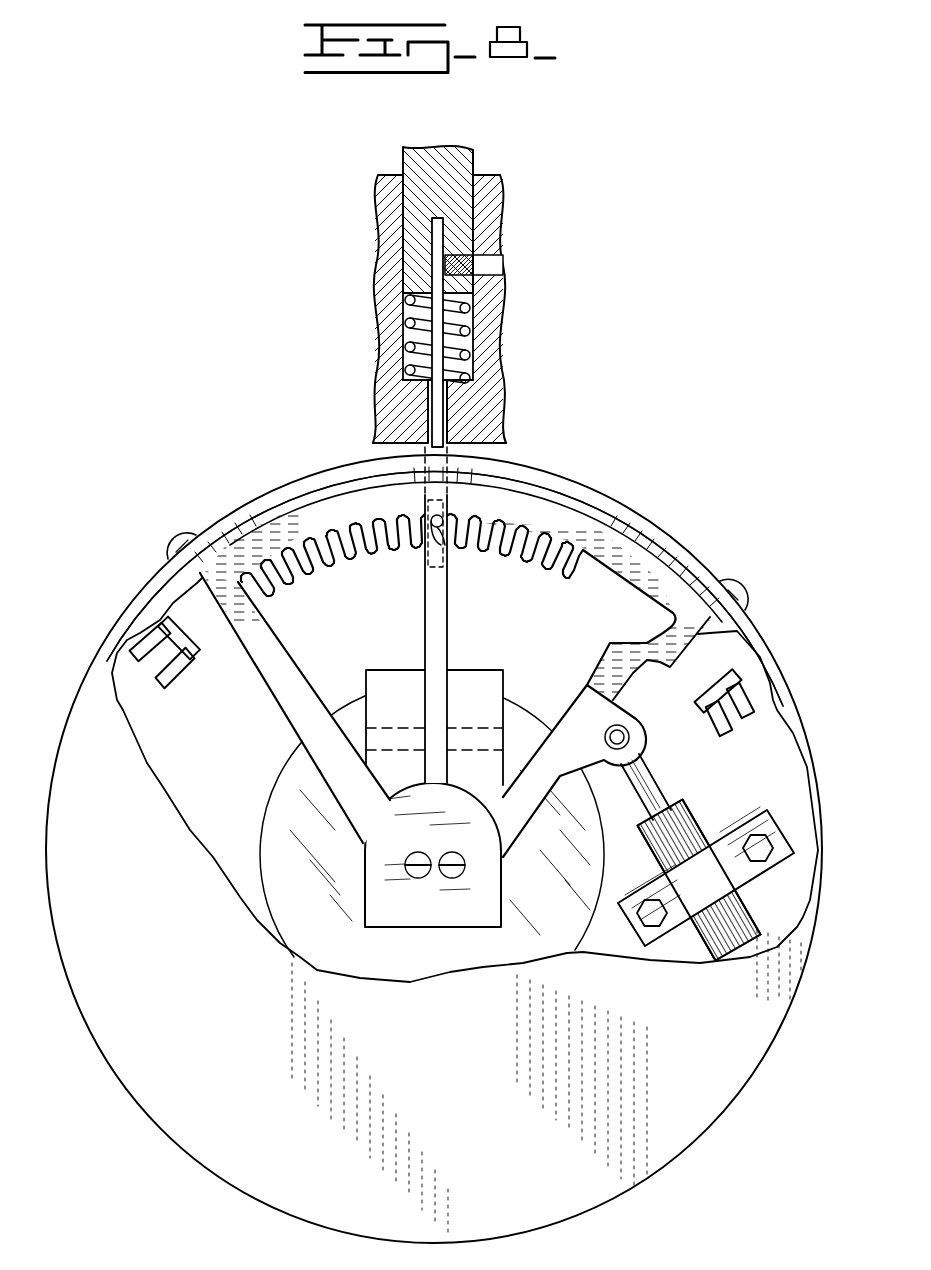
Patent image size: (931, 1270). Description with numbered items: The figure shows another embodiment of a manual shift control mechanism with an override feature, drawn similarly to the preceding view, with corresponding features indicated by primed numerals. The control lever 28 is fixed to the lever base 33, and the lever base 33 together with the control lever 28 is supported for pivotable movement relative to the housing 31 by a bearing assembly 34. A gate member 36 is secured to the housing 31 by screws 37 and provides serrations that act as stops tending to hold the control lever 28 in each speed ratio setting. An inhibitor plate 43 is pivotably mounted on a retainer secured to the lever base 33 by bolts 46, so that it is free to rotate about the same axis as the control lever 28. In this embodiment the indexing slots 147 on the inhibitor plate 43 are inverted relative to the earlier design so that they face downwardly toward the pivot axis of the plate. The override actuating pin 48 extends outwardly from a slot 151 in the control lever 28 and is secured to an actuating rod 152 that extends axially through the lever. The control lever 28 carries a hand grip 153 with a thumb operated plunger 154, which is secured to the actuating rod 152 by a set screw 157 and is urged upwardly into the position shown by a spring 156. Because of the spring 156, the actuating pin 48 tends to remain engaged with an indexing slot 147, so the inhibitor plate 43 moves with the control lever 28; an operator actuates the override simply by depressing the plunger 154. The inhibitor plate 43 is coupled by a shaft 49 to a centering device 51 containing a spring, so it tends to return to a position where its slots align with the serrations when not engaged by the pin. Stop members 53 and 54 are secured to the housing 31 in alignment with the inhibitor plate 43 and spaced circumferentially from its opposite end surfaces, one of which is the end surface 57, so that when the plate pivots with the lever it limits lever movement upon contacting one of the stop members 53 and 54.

The control lever 28 is at (438, 641).
The housing 31 is at (530, 465).
The lever base 33 is at (395, 678).
The bearing assembly 34 is at (432, 819).
The gate member 36 is at (640, 515).
The screws 37 is at (735, 582).
The inhibitor plate 43 is at (640, 577).
The bolts 46 is at (452, 878).
The override actuating pin 48 is at (432, 537).
The shaft 49 is at (647, 777).
The centering device 51 is at (718, 818).
The stop member 53 is at (180, 620).
The stop member 54 is at (735, 672).
The end surface 57 is at (720, 632).
The indexing slots 147 is at (342, 560).
The slot 151 is at (445, 545).
The actuating rod 152 is at (437, 398).
The hand grip 153 is at (503, 228).
The thumb operated plunger 154 is at (473, 155).
The spring 156 is at (405, 302).
The set screw 157 is at (473, 265).